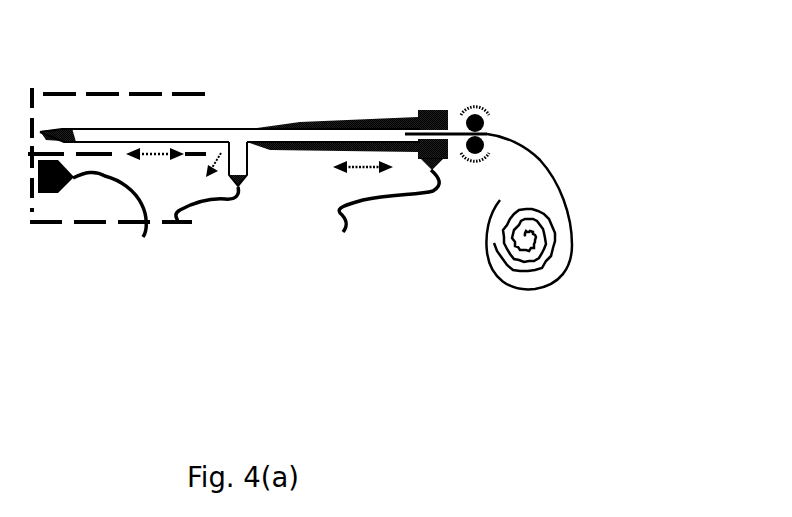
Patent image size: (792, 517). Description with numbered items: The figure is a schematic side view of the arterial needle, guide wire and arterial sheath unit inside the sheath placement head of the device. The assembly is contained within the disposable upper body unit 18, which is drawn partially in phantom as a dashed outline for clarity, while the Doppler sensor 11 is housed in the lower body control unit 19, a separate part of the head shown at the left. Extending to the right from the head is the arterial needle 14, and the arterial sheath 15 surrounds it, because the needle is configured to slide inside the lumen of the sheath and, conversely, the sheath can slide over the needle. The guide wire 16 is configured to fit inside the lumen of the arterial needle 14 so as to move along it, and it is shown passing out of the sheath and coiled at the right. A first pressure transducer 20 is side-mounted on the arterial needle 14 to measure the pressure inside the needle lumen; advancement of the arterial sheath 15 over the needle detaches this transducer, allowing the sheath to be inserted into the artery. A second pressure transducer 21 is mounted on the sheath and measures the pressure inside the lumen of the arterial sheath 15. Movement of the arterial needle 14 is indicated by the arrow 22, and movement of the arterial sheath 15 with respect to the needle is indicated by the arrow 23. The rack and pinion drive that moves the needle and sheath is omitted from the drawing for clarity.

The Doppler sensor 11 is at (58, 190).
The arterial needle 14 is at (135, 127).
The arterial sheath 15 is at (367, 118).
The guide wire 16 is at (553, 173).
The upper body unit 18 is at (62, 125).
The lower body control unit 19 is at (105, 213).
The first pressure transducer 20 is at (232, 143).
The second pressure transducer 21 is at (433, 170).
The arrow 22 is at (177, 150).
The arrow 23 is at (337, 175).